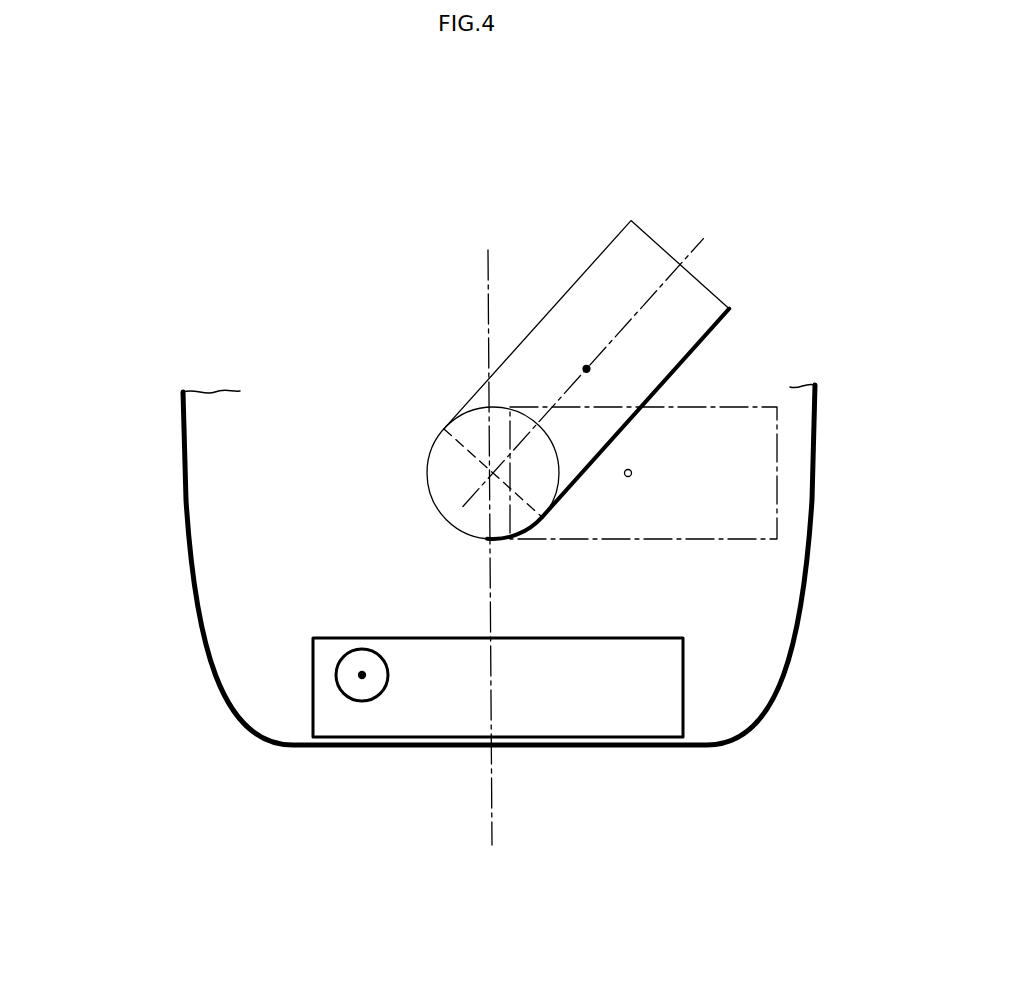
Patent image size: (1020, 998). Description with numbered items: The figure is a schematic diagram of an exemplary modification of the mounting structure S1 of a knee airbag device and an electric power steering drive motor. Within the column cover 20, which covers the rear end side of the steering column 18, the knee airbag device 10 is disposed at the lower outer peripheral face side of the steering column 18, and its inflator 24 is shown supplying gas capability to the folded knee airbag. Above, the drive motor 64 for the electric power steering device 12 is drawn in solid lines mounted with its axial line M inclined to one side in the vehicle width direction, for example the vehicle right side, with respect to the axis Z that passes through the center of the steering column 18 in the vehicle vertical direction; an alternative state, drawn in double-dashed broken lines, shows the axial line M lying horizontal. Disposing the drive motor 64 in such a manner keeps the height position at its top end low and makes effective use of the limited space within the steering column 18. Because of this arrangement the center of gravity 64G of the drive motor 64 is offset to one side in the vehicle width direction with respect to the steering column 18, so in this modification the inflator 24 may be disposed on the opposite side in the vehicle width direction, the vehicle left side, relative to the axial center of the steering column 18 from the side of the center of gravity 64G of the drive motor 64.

The knee airbag device 10 is at (727, 670).
The electric power steering device 12 is at (572, 326).
The steering column 18 is at (405, 450).
The column cover 20 is at (183, 498).
The inflator 24 is at (390, 688).
The drive motor 64 is at (610, 243).
The center of gravity 64G is at (586, 365).
The mounting structure S1 is at (340, 203).
The axis Z is at (487, 302).
The axial line M is at (683, 263).